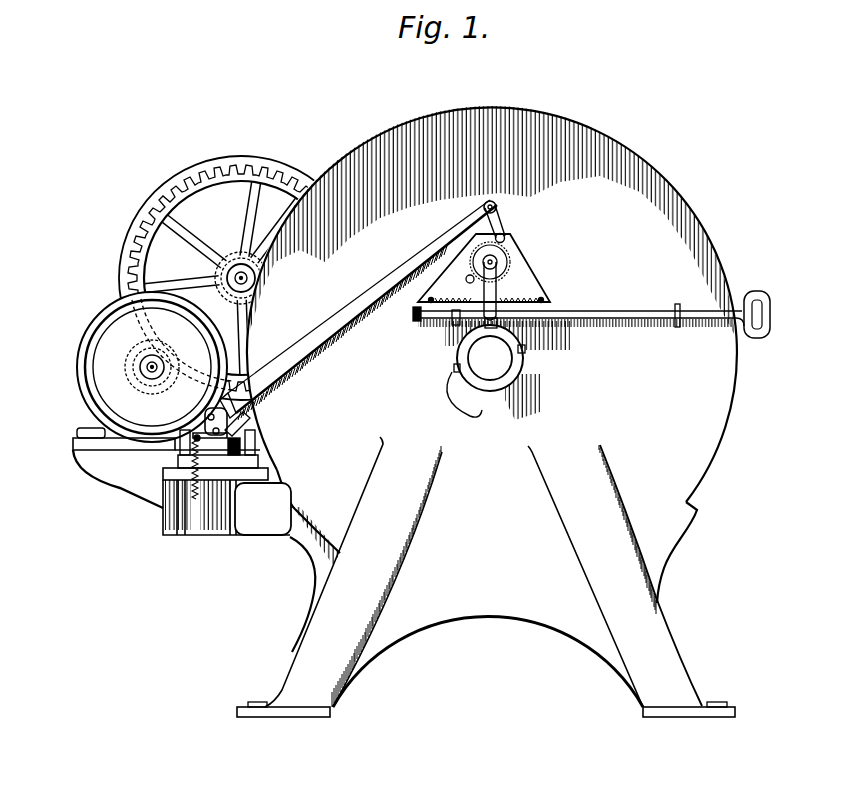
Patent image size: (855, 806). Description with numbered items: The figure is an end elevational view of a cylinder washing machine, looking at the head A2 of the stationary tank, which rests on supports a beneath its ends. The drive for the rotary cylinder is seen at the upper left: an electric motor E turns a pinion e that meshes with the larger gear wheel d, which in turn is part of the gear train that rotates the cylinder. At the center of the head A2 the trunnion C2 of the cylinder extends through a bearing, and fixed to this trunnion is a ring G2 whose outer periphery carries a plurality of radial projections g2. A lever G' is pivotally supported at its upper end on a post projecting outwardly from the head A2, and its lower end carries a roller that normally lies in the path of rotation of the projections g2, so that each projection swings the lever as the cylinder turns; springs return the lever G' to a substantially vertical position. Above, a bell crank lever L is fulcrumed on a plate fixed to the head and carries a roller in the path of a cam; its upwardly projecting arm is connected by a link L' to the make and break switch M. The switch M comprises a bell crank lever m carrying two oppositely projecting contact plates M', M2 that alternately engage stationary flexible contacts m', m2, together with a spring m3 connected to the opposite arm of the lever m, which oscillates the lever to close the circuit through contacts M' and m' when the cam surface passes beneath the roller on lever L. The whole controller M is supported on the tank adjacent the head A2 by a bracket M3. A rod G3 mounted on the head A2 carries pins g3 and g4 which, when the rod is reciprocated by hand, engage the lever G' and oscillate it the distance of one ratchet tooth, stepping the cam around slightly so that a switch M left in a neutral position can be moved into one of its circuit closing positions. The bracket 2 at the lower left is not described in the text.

The head of the tank A2 is at (637, 166).
The supports a is at (330, 665).
The larger gear wheel d is at (253, 166).
The electric motor E is at (95, 318).
The pinion e is at (145, 372).
The bracket 2 is at (93, 468).
The bell crank lever L is at (504, 219).
The link L' is at (362, 310).
The lever G' is at (499, 277).
The rod G3 is at (591, 312).
The pin g3 is at (452, 325).
The pin g4 is at (527, 345).
The trunnion C2 is at (520, 362).
The ring G2 is at (510, 384).
The radial projections g2 is at (473, 403).
The make and break switch M is at (219, 501).
The contact plate M' is at (192, 416).
The contact plate M2 is at (255, 406).
The bracket M3 is at (212, 528).
The bell crank lever m is at (262, 419).
The flexible contact m' is at (151, 480).
The flexible contact m2 is at (215, 438).
The spring m3 is at (196, 446).